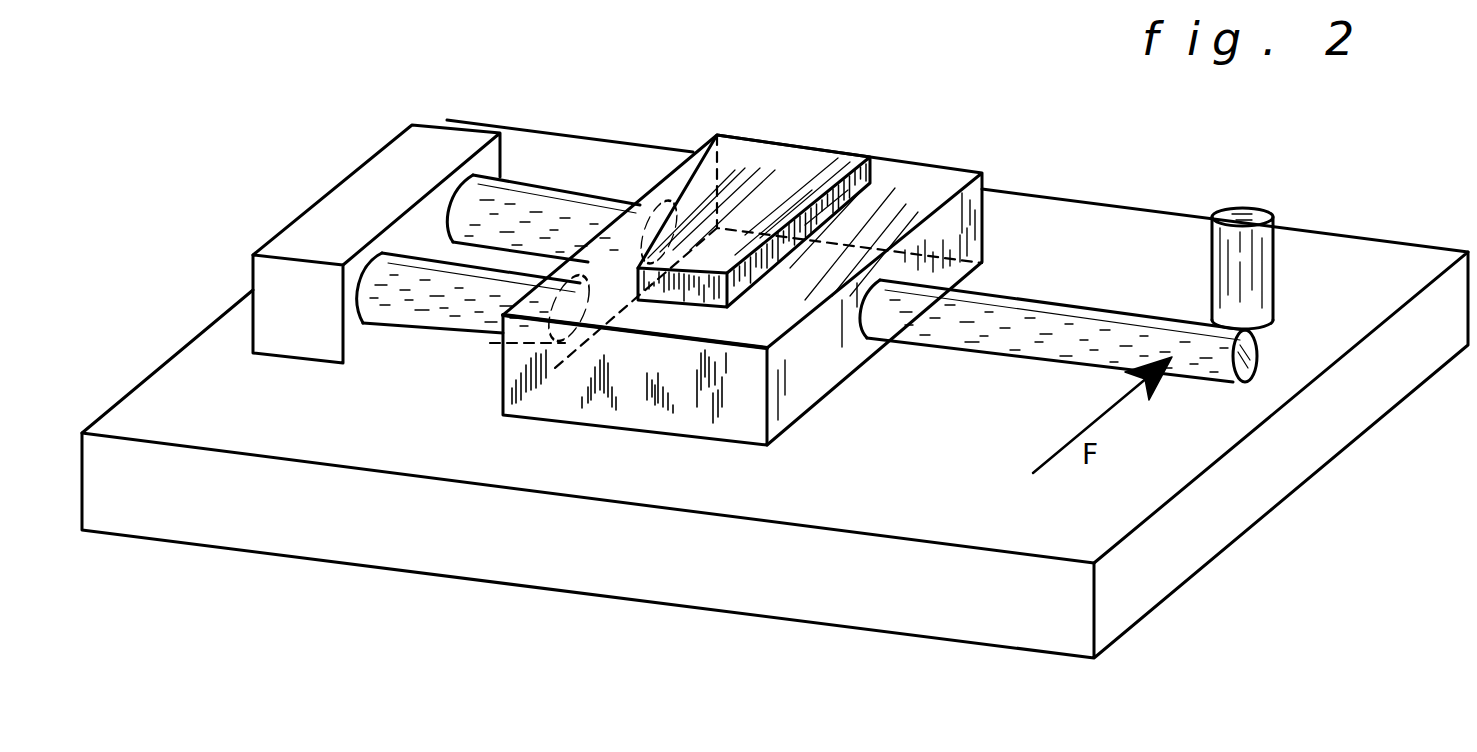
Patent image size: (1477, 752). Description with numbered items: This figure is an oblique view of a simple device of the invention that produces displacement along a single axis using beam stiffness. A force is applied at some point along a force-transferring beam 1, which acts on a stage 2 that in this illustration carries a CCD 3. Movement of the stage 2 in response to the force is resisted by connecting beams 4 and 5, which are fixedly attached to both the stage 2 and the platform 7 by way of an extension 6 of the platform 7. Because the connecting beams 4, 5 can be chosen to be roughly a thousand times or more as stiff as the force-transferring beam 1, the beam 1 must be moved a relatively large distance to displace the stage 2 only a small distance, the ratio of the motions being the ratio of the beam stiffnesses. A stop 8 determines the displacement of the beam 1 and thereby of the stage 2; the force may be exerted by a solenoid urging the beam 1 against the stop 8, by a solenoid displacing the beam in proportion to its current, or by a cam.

The force-transferring beam 1 is at (987, 350).
The stage 2 is at (986, 233).
The CCD 3 is at (803, 160).
The connecting beam 4 is at (552, 185).
The connecting beam 5 is at (456, 338).
The extension of platform 6 is at (287, 322).
The platform 7 is at (230, 530).
The stop 8 is at (1275, 268).